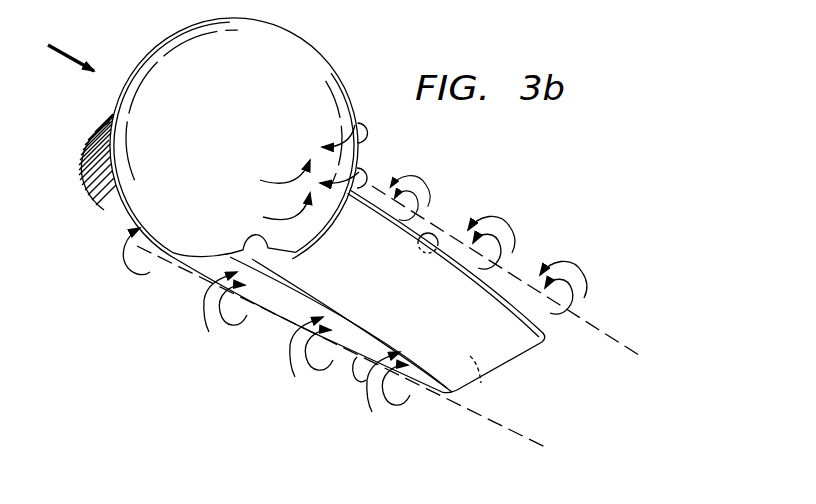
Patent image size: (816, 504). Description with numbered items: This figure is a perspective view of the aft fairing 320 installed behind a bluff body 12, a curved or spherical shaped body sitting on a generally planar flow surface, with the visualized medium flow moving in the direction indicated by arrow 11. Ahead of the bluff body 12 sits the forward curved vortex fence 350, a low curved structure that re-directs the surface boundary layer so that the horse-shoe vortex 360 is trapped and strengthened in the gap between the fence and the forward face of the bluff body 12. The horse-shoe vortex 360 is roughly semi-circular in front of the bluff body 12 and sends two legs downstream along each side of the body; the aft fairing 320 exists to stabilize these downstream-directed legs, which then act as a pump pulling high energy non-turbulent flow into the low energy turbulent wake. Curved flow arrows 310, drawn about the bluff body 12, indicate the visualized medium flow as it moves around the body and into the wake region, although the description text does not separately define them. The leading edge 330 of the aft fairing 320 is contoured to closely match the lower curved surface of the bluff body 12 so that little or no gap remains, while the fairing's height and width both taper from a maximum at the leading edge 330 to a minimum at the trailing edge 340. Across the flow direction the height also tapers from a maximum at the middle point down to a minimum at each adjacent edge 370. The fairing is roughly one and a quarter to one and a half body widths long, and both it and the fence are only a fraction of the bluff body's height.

The arrow 11 is at (62, 47).
The bluff body 12 is at (298, 37).
The air inlets 310 is at (278, 178).
The aft fairing 320 is at (515, 343).
The leading edge 330 is at (250, 231).
The trailing edge 340 is at (470, 357).
The forward curved vortex fence 350 is at (84, 181).
The horse-shoe vortex 360 is at (440, 184).
The adjacent edge 370 is at (418, 243).